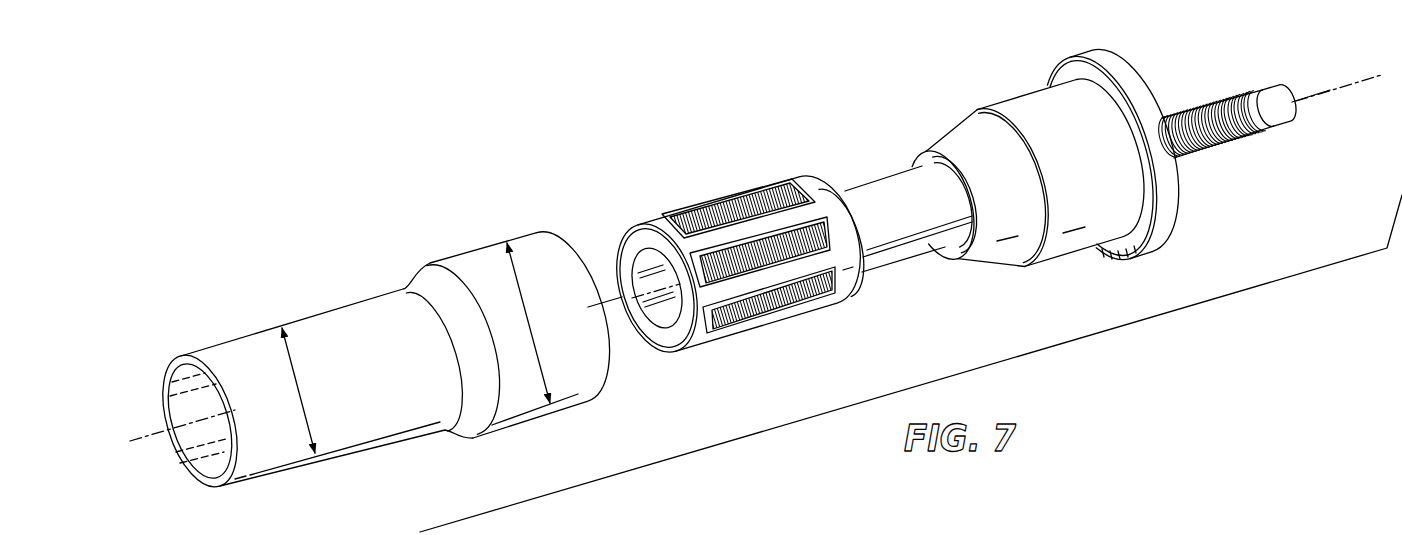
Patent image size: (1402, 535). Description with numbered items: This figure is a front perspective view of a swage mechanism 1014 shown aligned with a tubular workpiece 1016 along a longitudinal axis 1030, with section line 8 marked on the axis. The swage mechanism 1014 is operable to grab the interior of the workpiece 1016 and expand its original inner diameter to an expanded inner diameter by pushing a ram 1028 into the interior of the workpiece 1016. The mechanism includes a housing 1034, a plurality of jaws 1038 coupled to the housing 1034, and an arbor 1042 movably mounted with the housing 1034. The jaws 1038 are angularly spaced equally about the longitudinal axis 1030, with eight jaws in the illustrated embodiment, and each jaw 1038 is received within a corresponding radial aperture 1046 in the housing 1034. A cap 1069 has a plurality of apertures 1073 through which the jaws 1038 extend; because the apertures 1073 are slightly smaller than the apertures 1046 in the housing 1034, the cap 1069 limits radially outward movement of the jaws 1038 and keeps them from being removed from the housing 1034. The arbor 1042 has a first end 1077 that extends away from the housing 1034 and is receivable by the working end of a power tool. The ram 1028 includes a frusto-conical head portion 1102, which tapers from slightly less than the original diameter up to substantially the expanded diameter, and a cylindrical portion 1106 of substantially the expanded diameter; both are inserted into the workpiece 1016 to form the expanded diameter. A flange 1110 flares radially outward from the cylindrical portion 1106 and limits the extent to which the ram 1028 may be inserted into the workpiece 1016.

The section line 8- 8 is at (615, 296).
The swage mechanism 1014 is at (702, 106).
The workpiece 1016 is at (302, 297).
The ram 1028 is at (1024, 101).
The longitudinal axis 1030 is at (1340, 93).
The housing 1034 is at (901, 174).
The jaws 1038 is at (740, 200).
The arbor 1042 is at (1206, 103).
The radial aperture 1046 is at (853, 228).
The cap 1069 is at (709, 245).
The apertures 1073 is at (808, 200).
The first end 1077 is at (1263, 88).
The frusto-conical head portion 1102 is at (990, 264).
The cylindrical portion 1106 is at (1052, 254).
The flange 1110 is at (1163, 243).